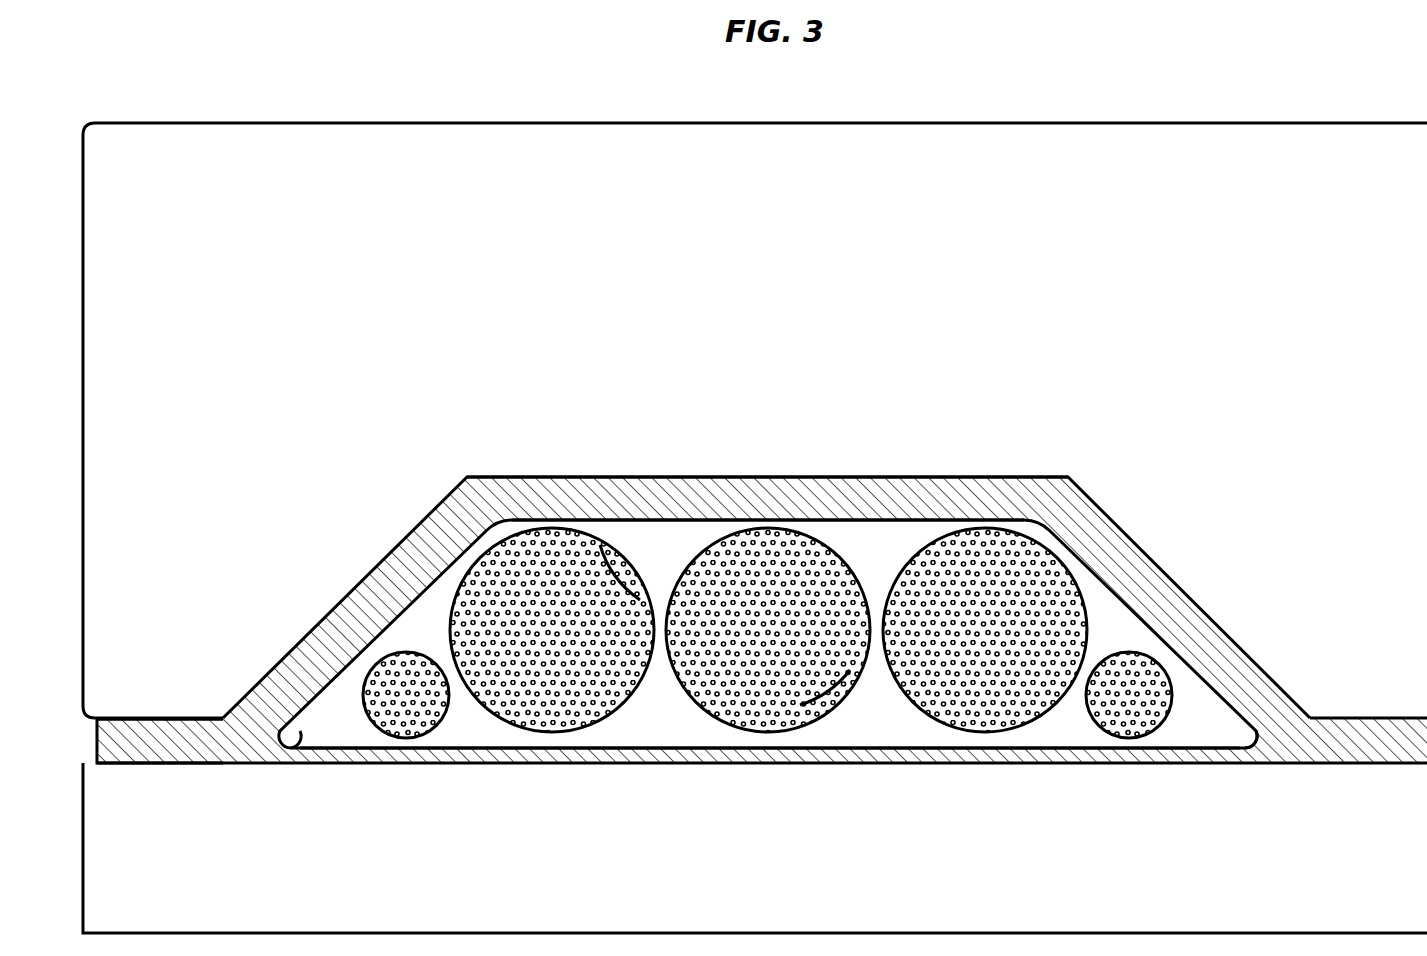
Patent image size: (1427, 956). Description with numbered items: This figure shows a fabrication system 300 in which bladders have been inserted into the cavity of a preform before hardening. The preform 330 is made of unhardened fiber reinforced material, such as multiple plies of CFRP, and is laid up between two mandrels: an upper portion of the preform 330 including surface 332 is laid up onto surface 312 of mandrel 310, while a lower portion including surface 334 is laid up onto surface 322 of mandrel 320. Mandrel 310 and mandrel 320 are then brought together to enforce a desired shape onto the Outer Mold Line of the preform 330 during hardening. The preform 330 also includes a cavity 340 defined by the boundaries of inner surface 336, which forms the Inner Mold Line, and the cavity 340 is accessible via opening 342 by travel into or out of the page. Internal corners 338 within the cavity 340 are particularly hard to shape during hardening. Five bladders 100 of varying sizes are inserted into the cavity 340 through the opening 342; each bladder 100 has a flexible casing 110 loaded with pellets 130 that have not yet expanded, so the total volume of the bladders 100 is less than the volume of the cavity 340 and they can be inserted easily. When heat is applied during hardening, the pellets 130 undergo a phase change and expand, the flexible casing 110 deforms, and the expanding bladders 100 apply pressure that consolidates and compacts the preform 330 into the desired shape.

The fabrication system 300 is at (755, 380).
The mandrel 310 is at (786, 199).
The mandrel 320 is at (786, 927).
The surface 312 is at (762, 600).
The surface 322 is at (762, 771).
The preform 330 is at (187, 735).
The surface 332 is at (767, 461).
The surface 334 is at (1213, 735).
The inner surface 336 is at (768, 477).
The internal corners 338 is at (324, 730).
The cavity 340 is at (768, 662).
The opening 342 is at (727, 750).
The bladder 100 is at (417, 740).
The flexible casing 110 is at (640, 564).
The pellets 130 is at (828, 706).